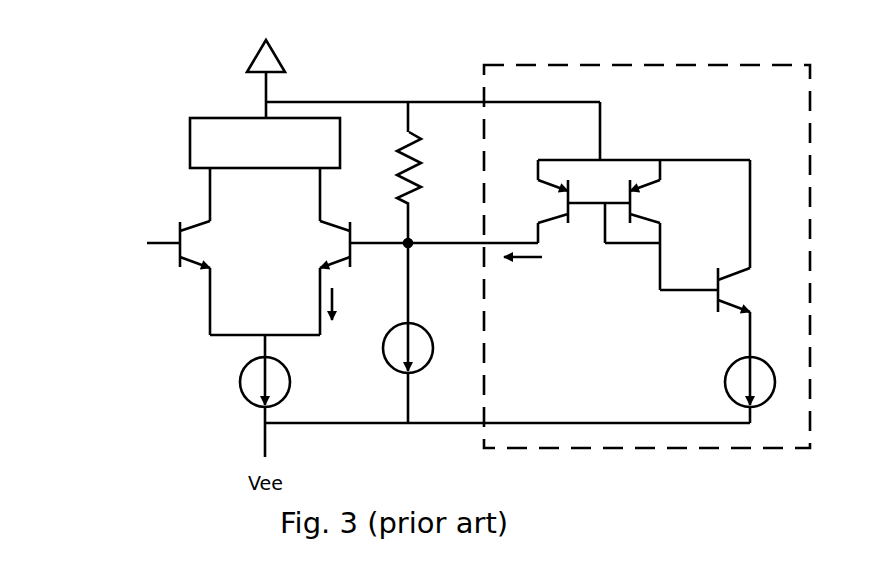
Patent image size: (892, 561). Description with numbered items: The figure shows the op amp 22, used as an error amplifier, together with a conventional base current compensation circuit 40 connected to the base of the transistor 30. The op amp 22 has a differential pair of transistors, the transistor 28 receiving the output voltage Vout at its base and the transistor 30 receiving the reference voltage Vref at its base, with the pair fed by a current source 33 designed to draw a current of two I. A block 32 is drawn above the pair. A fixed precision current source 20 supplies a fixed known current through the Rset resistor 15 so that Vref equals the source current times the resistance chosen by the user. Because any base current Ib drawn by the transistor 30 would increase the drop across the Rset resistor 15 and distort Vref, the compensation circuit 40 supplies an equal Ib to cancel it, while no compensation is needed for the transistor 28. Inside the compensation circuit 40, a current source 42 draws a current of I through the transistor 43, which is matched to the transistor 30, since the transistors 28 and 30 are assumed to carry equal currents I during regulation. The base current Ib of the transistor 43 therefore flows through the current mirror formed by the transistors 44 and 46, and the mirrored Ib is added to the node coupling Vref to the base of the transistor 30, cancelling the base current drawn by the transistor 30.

The op amp 22 is at (111, 160).
The current mirror block 32 is at (234, 122).
The transistor 28 is at (182, 278).
The transistor 30 is at (325, 240).
The current source 33 is at (240, 380).
The Rset resistor 15 is at (393, 157).
The current source 20 is at (380, 340).
The base current compensation circuit 40 is at (692, 64).
The transistor 46 is at (540, 205).
The transistor 44 is at (655, 200).
The transistor 43 is at (707, 305).
The current source 42 is at (773, 396).